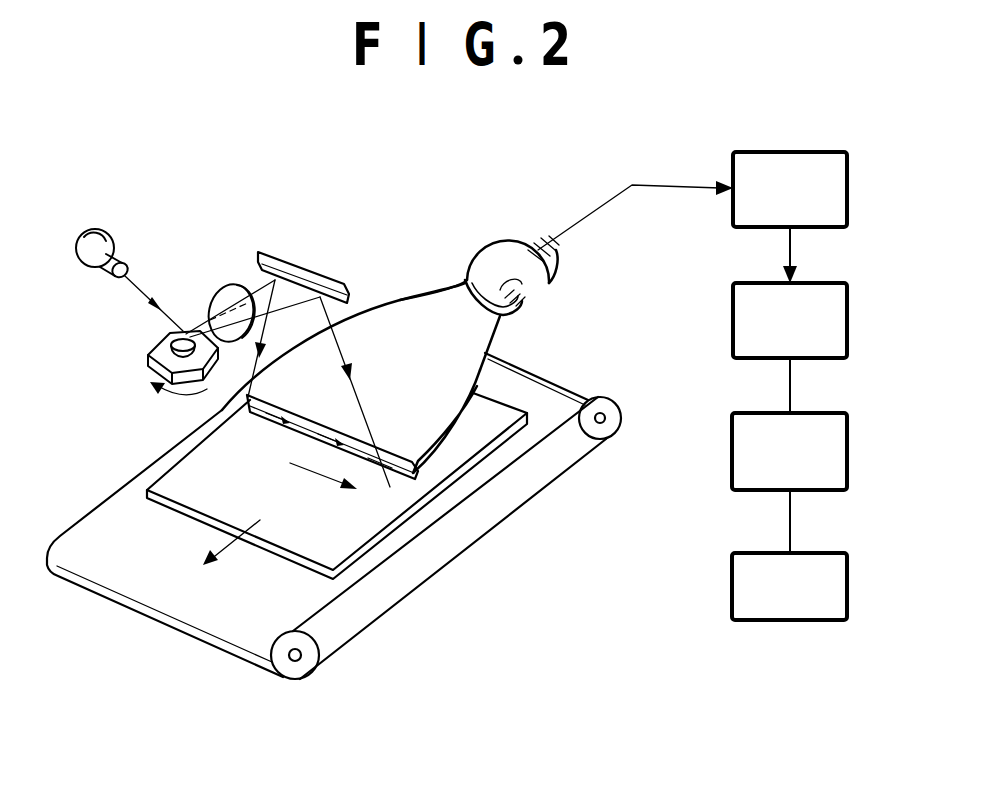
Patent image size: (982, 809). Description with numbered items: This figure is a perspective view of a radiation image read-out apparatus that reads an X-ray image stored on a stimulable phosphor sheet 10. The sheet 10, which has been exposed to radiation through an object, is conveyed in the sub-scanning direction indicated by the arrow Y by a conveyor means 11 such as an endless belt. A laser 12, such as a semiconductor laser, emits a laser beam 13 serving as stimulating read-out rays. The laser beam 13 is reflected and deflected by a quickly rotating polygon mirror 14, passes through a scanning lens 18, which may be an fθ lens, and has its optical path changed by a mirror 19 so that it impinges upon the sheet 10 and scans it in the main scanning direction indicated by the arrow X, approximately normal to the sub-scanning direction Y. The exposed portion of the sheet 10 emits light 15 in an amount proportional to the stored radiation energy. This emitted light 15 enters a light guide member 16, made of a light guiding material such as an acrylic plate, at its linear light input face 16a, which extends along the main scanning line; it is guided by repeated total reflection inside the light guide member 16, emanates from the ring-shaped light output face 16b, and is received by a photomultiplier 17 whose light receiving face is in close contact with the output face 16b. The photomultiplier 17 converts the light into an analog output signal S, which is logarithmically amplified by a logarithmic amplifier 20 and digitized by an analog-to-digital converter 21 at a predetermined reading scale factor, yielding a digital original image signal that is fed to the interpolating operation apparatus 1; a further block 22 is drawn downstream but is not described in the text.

The interpolating operation apparatus 1 is at (732, 455).
The stimulable phosphor sheet 10 is at (364, 523).
The conveyor means 11 is at (313, 590).
The laser 12 is at (115, 241).
The laser beam 13 is at (141, 290).
The rotating polygon mirror 14 is at (147, 353).
The emitted light 15 is at (252, 428).
The light guide member 16 is at (412, 284).
The linear light input face 16a is at (404, 473).
The ring-shaped light output face 16b is at (522, 294).
The photomultiplier 17 is at (502, 246).
The scanning lens 18 is at (228, 283).
The mirror 19 is at (309, 268).
The logarithmic amplifier 20 is at (805, 151).
The analog-to-digital converter 21 is at (735, 282).
The memory 22 is at (732, 590).
The analog output signal S is at (656, 187).
The main scanning direction X is at (323, 488).
The sub-scanning direction Y is at (223, 558).